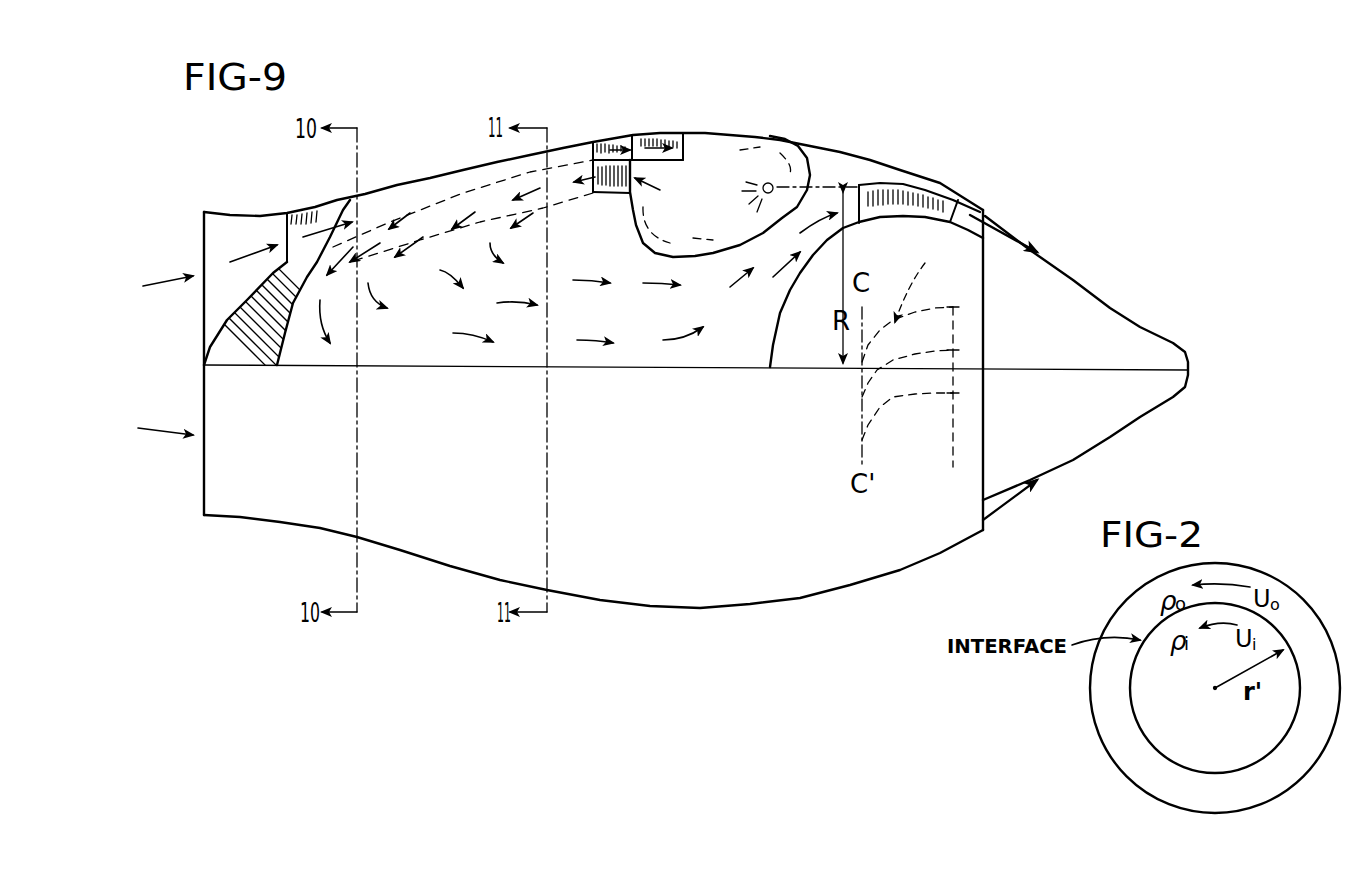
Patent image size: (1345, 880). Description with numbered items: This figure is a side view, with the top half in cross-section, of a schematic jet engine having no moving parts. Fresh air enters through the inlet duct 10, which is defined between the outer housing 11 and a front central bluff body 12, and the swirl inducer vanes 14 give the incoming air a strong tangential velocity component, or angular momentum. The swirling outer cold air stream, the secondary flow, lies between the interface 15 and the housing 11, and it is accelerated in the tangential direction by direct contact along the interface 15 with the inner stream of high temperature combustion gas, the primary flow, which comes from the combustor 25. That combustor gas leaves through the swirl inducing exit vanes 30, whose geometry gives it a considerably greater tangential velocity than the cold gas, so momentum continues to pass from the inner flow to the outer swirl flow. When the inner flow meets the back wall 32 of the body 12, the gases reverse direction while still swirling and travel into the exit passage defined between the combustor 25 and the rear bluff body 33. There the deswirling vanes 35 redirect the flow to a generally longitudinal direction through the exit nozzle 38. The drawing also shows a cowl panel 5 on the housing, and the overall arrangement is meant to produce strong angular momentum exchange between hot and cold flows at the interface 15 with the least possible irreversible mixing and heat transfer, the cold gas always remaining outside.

The outer cowl panel 5 is at (668, 143).
The inlet duct 10 is at (230, 240).
The outer housing 11 is at (467, 167).
The front central bluff body 12 is at (253, 325).
The swirl inducer vanes 14 is at (316, 225).
The interface 15 is at (417, 210).
The combustor 25 is at (700, 183).
The swirl inducing exit vanes 30 is at (610, 202).
The back wall 32 is at (285, 367).
The rear bluff body 33 is at (777, 337).
The deswirling vanes 35 is at (902, 202).
The exit nozzle 38 is at (987, 218).